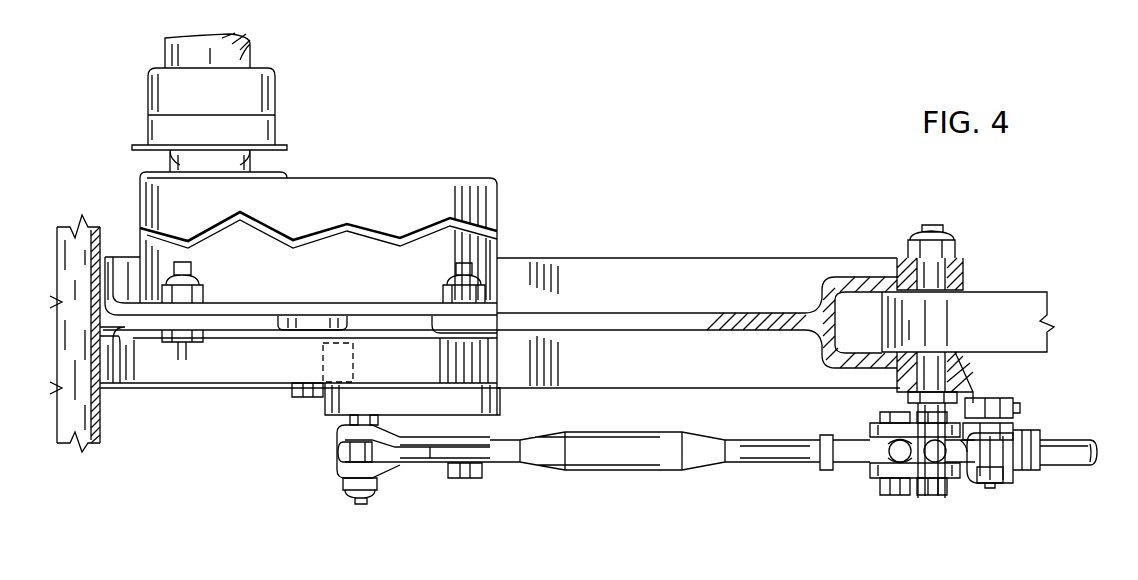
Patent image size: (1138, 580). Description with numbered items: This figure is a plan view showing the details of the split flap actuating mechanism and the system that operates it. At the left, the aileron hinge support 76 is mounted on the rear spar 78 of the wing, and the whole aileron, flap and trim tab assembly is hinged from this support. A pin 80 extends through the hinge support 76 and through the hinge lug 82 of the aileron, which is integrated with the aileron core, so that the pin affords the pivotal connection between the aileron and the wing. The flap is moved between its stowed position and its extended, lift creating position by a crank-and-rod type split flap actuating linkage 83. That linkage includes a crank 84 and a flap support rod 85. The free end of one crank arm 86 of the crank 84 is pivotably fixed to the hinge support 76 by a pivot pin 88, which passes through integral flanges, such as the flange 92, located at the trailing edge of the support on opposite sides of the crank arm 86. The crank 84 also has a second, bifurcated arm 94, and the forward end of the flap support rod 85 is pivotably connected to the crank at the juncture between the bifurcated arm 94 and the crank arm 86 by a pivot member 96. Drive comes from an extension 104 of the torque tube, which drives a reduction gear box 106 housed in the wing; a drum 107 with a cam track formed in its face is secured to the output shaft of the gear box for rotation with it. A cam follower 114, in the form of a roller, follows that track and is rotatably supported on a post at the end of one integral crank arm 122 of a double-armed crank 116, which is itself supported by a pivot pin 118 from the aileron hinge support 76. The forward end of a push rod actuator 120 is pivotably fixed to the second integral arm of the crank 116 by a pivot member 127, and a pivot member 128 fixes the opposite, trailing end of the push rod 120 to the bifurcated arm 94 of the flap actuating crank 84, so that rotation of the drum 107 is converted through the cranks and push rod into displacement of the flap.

The aileron hinge support 76 is at (700, 254).
The rear spar 78 is at (84, 218).
The pin 80 is at (933, 226).
The hinge lug 82 is at (990, 291).
The split flap actuating linkage 83 is at (982, 491).
The crank 84 is at (867, 481).
The flap support rod 85 is at (1093, 463).
The crank arm 86 is at (1000, 428).
The pivot pin 88 is at (990, 488).
The flange 92 is at (1013, 412).
The bifurcated arm 94 is at (870, 474).
The pivot member 96 is at (932, 497).
The torque tube extension 104 is at (257, 57).
The reduction gear box 106 is at (360, 185).
The drum 107 is at (185, 373).
The cam follower 114 is at (322, 362).
The double-armed crank 116 is at (318, 406).
The pivot pin 118 is at (467, 267).
The push rod actuator 120 is at (631, 465).
The crank arm 122 is at (320, 418).
The pivot member 127 is at (361, 503).
The pivot member 128 is at (890, 497).